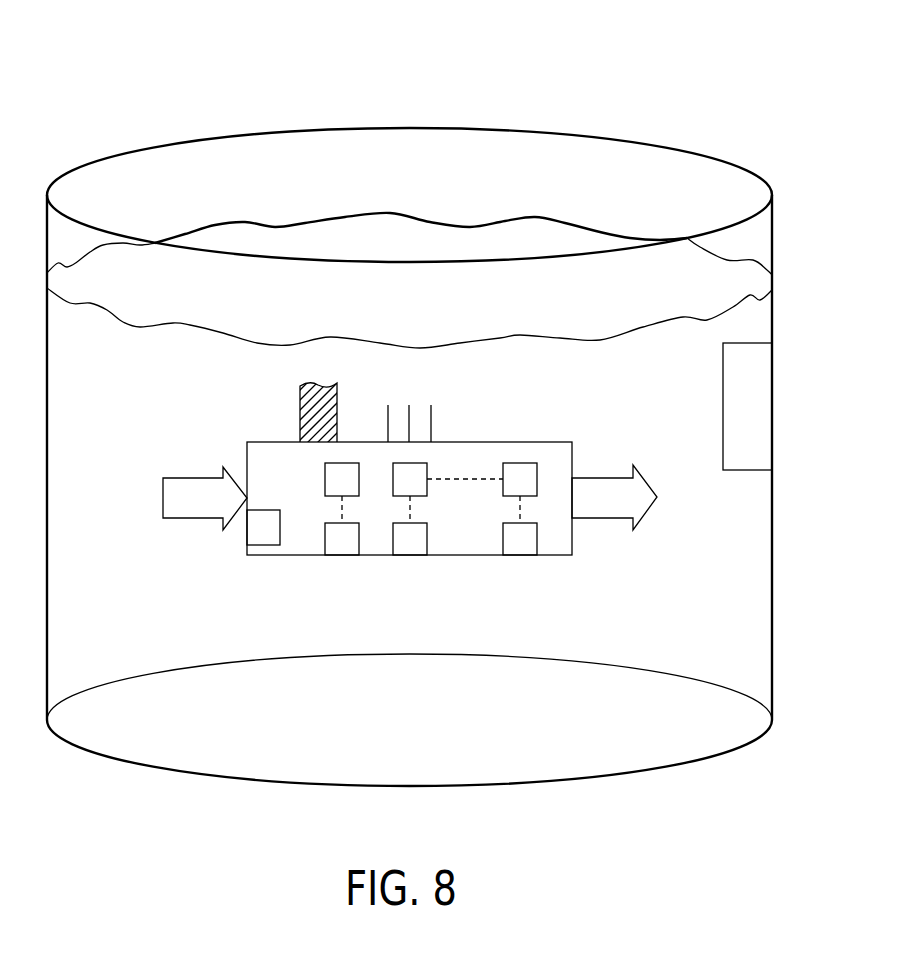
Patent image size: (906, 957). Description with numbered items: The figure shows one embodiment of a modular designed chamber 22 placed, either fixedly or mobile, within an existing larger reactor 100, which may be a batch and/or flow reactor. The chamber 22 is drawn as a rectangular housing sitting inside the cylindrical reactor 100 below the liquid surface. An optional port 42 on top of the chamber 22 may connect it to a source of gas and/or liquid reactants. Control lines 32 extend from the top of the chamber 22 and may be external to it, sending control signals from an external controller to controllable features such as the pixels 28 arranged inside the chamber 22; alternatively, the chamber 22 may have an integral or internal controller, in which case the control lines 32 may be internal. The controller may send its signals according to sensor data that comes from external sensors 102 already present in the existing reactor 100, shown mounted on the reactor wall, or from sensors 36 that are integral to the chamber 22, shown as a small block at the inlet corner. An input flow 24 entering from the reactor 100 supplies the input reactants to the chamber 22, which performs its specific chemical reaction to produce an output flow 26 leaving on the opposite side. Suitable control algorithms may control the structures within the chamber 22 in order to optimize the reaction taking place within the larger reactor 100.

The reactor 100 is at (705, 85).
The chamber 22 is at (528, 442).
The inlet flow 24 is at (212, 478).
The output flow 26 is at (610, 518).
The pixels 28 is at (343, 547).
The control lines 32 is at (443, 403).
The sensors 36 is at (265, 533).
The port 42 is at (308, 406).
The external sensors 102 is at (747, 472).